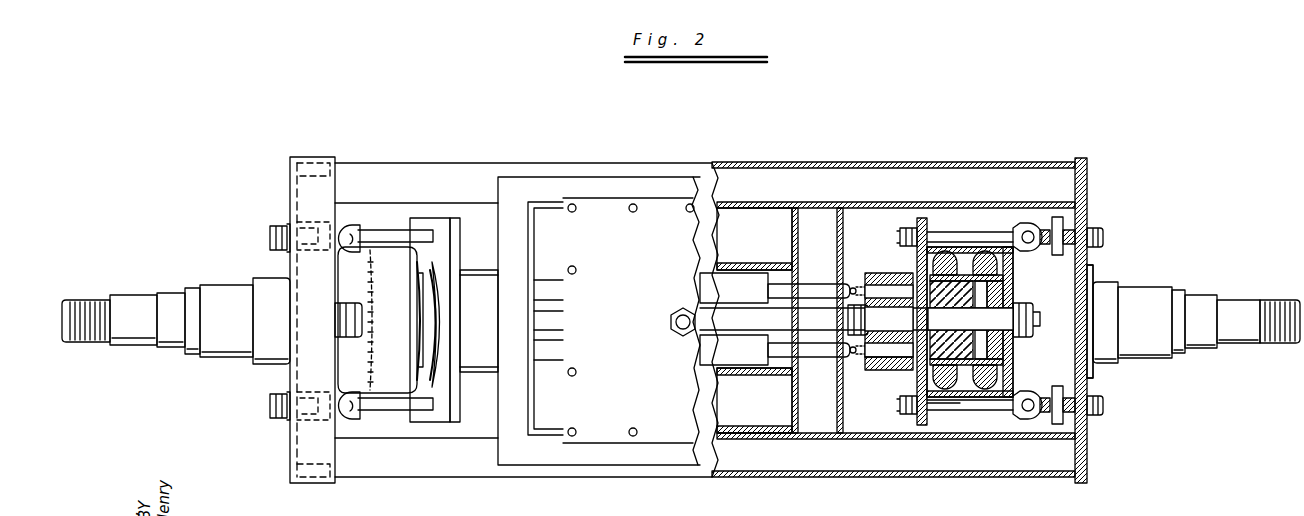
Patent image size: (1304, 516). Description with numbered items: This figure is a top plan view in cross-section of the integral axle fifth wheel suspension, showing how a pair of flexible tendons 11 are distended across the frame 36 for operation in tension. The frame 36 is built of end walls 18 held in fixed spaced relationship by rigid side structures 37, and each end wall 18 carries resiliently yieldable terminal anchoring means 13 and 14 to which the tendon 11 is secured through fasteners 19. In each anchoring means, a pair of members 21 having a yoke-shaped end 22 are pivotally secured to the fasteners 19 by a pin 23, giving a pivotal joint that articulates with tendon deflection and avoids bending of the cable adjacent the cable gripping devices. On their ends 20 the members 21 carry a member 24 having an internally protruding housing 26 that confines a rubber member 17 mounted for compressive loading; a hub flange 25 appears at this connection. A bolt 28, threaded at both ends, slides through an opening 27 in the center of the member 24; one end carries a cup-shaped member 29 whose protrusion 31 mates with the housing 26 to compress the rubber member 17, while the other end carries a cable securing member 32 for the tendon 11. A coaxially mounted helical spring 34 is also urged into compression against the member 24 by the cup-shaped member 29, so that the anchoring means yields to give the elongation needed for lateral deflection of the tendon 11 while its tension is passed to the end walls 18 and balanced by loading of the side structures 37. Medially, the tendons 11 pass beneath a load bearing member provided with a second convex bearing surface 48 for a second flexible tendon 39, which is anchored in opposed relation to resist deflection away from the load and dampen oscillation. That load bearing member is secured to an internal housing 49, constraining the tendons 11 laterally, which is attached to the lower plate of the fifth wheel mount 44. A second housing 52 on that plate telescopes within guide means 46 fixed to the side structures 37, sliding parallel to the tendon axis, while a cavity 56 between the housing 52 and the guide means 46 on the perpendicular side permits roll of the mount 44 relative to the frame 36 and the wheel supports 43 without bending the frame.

The flexible tendon 11 is at (780, 350).
The resiliently yieldable terminal anchoring means 13 is at (1020, 357).
The resiliently yieldable terminal anchoring means 14 is at (335, 357).
The rubber member 17 is at (988, 285).
The end wall 18 is at (1085, 300).
The fasteners 19 is at (1103, 232).
The ends 20 is at (897, 238).
The member 21 is at (980, 232).
The yoke-shaped end 22 is at (1030, 223).
The pin 23 is at (1082, 229).
The member 24 is at (918, 265).
The hub flange 25 is at (925, 368).
The internally protruding housing 26 is at (955, 398).
The opening 27 is at (885, 293).
The bolt 28 is at (1012, 292).
The cup-shaped member 29 is at (1015, 342).
The protrusion 31 is at (1000, 383).
The cable securing member 32 is at (838, 365).
The helical spring 34 is at (947, 255).
The frame 36 is at (287, 178).
The rigid side structures 37 is at (432, 193).
The second flexible tendon 39 is at (712, 312).
The wheel supports 43 is at (135, 304).
The fifth wheel mount 44 is at (645, 358).
The guide means 46 is at (893, 305).
The second convex bearing surface 48 is at (1093, 378).
The internal housing 49 is at (765, 270).
The second housing 52 is at (799, 232).
The cavity 56 is at (545, 372).